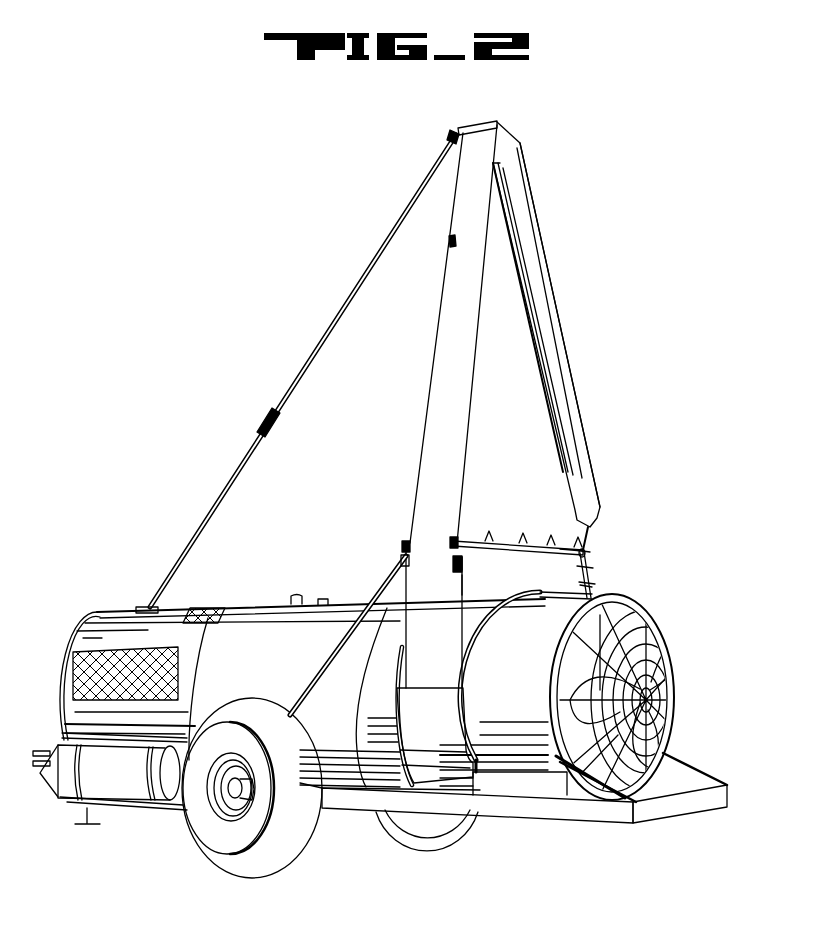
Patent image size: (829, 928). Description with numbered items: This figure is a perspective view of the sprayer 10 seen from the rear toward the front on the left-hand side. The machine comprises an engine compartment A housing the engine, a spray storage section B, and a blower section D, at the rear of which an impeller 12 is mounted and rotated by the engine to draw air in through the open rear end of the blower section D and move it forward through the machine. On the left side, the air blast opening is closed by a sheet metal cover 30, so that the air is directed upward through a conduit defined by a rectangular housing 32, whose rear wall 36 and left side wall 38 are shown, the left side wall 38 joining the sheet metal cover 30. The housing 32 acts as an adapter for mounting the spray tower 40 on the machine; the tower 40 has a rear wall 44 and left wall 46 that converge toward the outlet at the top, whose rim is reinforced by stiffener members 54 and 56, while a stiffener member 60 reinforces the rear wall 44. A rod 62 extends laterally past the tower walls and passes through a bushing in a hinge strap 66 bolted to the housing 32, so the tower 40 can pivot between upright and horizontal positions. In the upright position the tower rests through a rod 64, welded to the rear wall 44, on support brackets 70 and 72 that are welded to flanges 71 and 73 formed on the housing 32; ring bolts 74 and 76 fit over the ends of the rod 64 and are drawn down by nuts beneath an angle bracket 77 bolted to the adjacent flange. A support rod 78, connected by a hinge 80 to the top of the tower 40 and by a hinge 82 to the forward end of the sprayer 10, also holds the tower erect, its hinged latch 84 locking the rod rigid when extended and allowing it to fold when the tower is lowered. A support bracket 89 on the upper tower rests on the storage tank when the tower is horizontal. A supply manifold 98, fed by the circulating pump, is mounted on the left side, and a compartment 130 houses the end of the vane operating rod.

The sprayer 10 is at (635, 503).
The impeller 12 is at (607, 697).
The sheet metal cover 30 is at (417, 723).
The rectangular housing 32 is at (617, 563).
The rear wall 36 is at (527, 600).
The left side wall 38 is at (424, 638).
The spray tower 40 is at (570, 336).
The rear wall 44 is at (514, 319).
The left wall 46 is at (438, 334).
The stiffener member 54 is at (482, 98).
The stiffener member 56 is at (571, 368).
The stiffener member 60 is at (540, 367).
The rod 62 is at (403, 543).
The rod 64 is at (505, 541).
The hinge strap 66 is at (401, 556).
The support bracket 70 is at (464, 565).
The flange 71 is at (464, 585).
The support bracket 72 is at (576, 563).
The flange 73 is at (590, 572).
The ring bolt 74 is at (453, 540).
The ring bolt 76 is at (586, 554).
The angle bracket 77 is at (455, 566).
The support rod 78 is at (280, 365).
The hinge 80 is at (452, 133).
The hinge 82 is at (146, 607).
The hinged latch 84 is at (264, 419).
The support bracket 89 is at (452, 240).
The supply manifold 98 is at (398, 688).
The compartment 130 is at (375, 656).
The engine compartment A is at (80, 651).
The spray storage section B is at (258, 673).
The blower section D is at (666, 643).